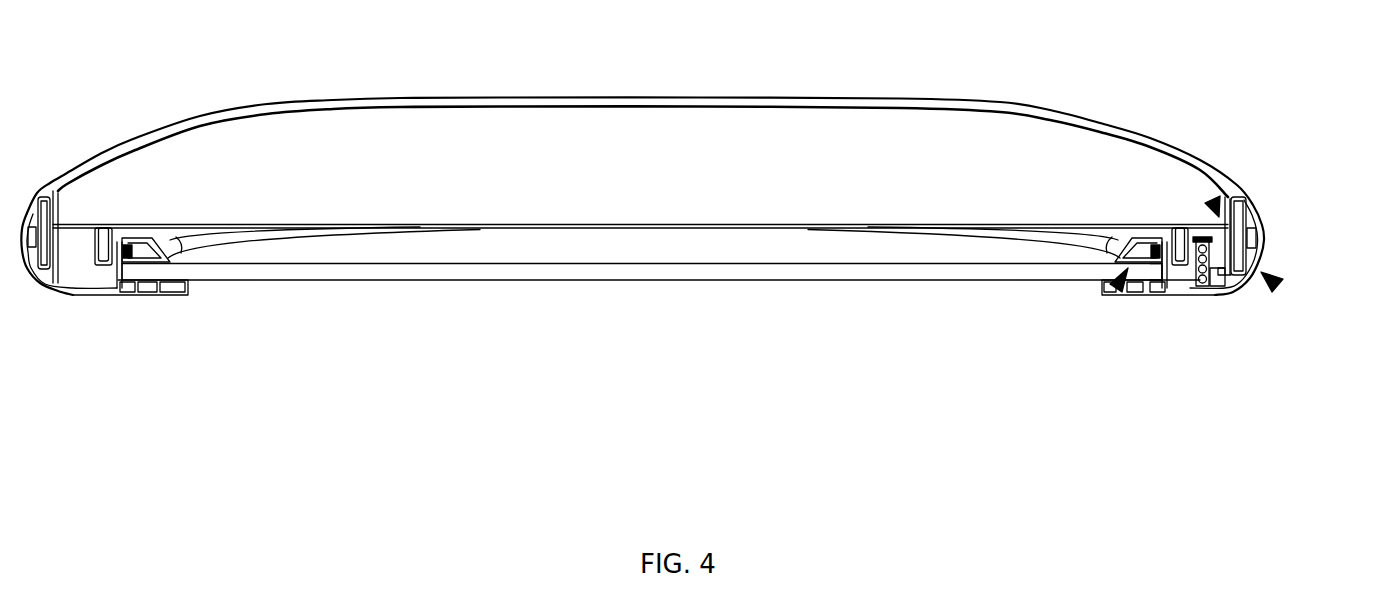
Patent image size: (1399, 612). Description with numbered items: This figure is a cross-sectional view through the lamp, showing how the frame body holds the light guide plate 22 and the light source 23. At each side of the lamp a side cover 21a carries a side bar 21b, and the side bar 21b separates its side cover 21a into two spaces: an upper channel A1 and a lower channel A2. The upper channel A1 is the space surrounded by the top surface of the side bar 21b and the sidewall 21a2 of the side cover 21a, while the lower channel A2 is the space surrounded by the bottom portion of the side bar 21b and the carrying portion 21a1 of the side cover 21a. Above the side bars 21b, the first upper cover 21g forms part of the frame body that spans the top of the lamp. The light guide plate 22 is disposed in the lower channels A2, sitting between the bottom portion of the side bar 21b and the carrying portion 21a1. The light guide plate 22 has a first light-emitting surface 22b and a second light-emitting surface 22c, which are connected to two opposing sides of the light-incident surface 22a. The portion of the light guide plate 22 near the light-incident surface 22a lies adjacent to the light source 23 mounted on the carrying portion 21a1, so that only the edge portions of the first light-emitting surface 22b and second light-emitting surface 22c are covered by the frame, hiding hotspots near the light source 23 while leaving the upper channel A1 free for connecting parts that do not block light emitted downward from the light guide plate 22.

The first upper cover 21g is at (790, 106).
The side bar 21b is at (642, 146).
The upper channel A1 is at (1212, 200).
The sidewall 21a2 is at (1250, 212).
The side cover 21a is at (1278, 286).
The first light-emitting surface 22b is at (728, 263).
The second light-emitting surface 22c is at (731, 281).
The light guide plate 22 is at (642, 270).
The lower channel A2 is at (1117, 286).
The carrying portion 21a1 is at (1125, 290).
The light-incident surface 22a is at (1147, 293).
The light source 23 is at (1180, 293).